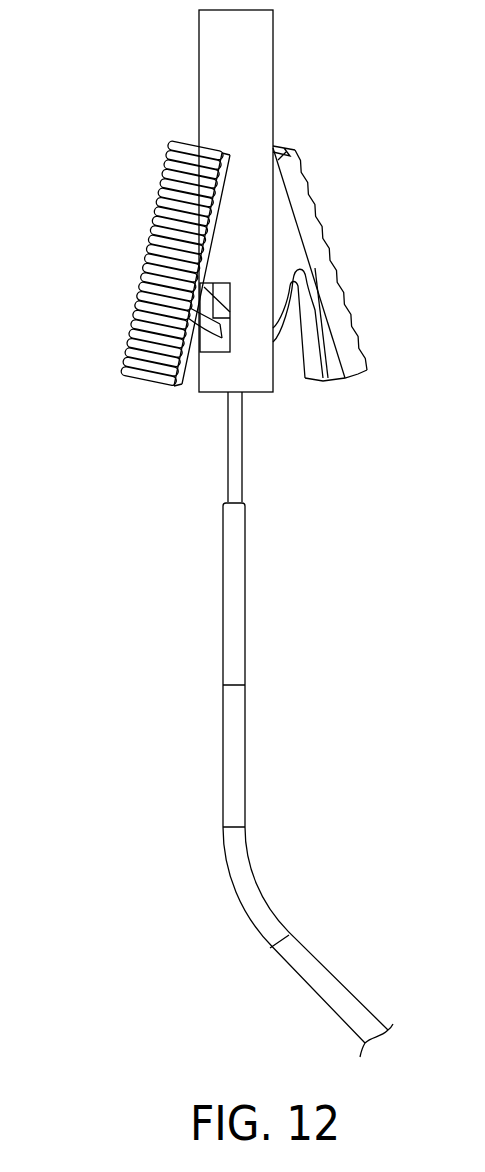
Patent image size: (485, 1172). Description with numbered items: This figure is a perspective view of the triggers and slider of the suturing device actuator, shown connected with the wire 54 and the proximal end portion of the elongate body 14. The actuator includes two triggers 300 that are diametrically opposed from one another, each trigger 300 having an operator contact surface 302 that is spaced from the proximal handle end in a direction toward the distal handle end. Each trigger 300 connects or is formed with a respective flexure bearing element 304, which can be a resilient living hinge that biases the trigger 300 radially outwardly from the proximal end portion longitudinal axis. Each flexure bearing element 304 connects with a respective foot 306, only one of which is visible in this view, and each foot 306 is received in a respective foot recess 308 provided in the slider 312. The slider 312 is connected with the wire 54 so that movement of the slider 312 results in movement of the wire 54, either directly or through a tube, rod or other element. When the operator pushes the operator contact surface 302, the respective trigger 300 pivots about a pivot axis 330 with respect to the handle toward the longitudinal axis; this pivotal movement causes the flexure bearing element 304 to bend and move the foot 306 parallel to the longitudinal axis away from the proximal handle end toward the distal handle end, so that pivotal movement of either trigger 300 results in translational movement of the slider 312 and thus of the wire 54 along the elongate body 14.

The slider 312 is at (262, 43).
The trigger 300 is at (176, 182).
The pivot axis 330 is at (283, 148).
The operator contact surface 302 is at (197, 316).
The foot recess 308 is at (203, 295).
The foot 306 is at (218, 336).
The flexure bearing element 304 is at (292, 330).
The wire 54 is at (235, 477).
The elongate body 14 is at (270, 604).